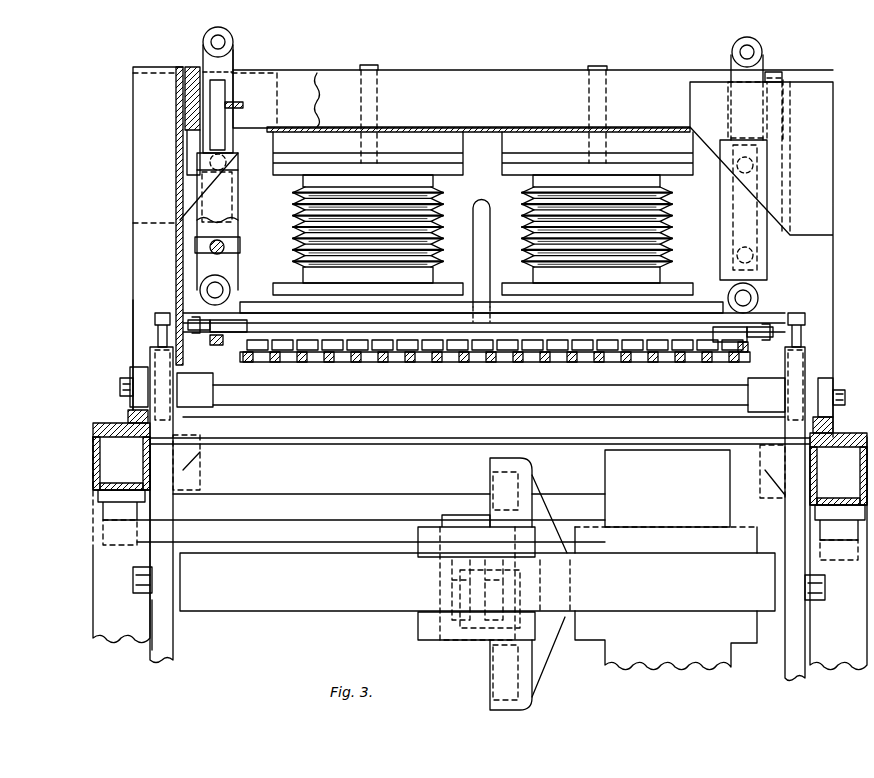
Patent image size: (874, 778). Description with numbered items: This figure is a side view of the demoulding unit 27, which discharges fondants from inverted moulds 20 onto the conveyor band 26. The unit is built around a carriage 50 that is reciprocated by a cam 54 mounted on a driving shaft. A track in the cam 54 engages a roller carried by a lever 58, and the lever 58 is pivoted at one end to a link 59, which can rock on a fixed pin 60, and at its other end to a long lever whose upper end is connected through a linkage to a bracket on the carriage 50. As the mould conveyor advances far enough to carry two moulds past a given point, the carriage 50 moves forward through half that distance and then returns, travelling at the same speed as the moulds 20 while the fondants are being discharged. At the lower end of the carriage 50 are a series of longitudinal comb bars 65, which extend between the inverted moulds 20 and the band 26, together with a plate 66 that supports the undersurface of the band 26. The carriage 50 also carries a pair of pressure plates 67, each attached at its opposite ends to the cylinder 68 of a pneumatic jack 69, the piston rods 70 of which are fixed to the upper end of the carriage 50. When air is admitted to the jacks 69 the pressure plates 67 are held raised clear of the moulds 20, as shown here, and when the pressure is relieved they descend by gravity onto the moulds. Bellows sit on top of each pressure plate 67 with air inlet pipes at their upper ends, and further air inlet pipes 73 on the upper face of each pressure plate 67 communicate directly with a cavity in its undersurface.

The mould 20 is at (428, 320).
The conveyor band 26 is at (338, 362).
The demoulding unit 27 is at (512, 70).
The carriage 50 is at (177, 240).
The cam 54 is at (490, 462).
The lever 58 is at (480, 612).
The link 59 is at (442, 573).
The fixed pin 60 is at (345, 520).
The comb bar 65 is at (548, 340).
The plate 66 is at (385, 360).
The pressure plate 67 is at (655, 303).
The cylinder 68 is at (238, 217).
The pneumatic jack 69 is at (238, 197).
The piston rod 70 is at (235, 76).
The air inlet pipe 73 is at (486, 232).